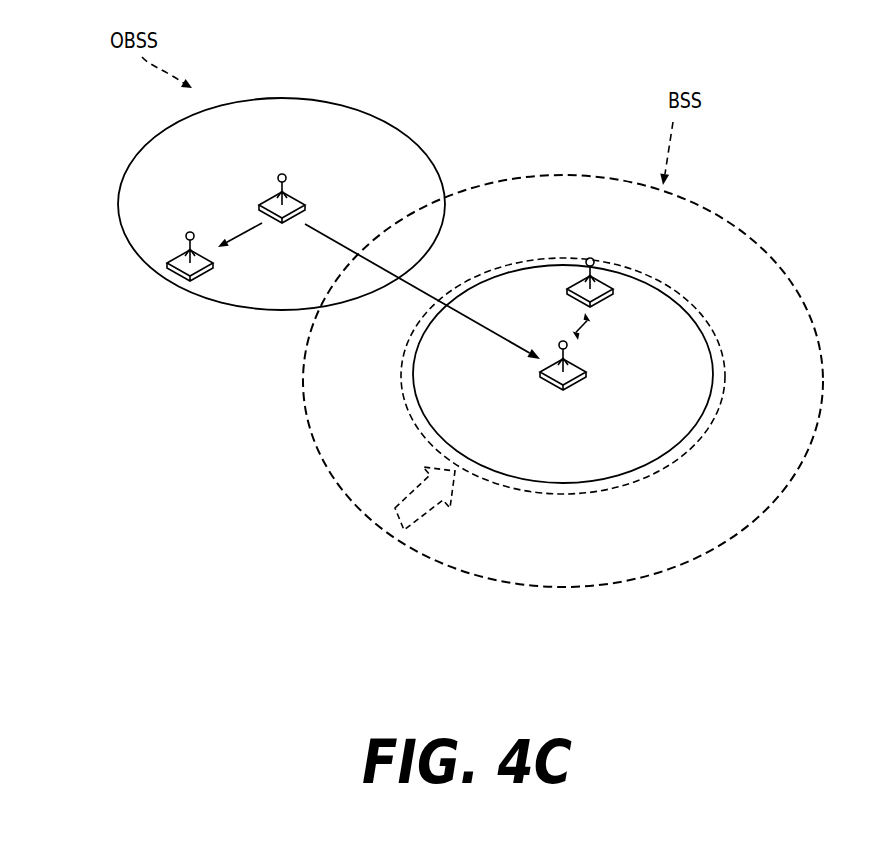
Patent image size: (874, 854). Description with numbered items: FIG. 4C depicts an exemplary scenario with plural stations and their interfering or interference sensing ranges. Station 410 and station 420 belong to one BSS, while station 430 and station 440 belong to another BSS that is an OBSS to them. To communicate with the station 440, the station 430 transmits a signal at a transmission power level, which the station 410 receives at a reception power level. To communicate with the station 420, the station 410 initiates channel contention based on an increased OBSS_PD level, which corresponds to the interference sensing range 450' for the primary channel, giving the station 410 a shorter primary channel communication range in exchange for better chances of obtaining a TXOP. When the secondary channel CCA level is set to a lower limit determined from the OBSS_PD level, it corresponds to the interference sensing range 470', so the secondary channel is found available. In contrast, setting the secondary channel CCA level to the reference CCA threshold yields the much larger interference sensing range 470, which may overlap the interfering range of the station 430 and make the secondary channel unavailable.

The station 410 is at (582, 383).
The station 420 is at (377, 116).
The station 430 is at (303, 200).
The station 440 is at (203, 272).
The interference sensing range 450' is at (569, 379).
The interference sensing range 470' is at (563, 344).
The interference sensing range 470 is at (563, 384).